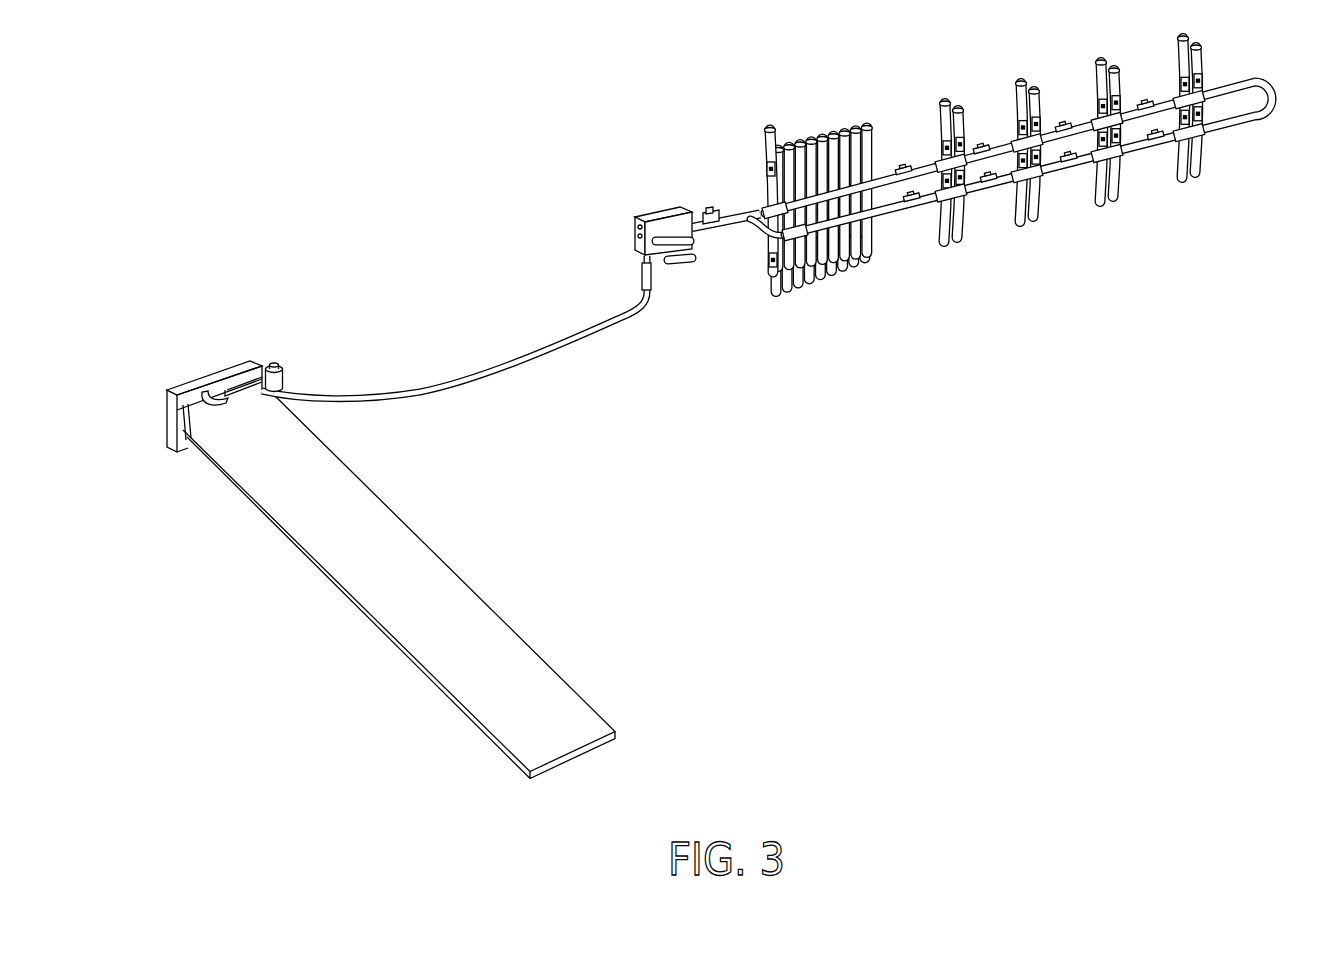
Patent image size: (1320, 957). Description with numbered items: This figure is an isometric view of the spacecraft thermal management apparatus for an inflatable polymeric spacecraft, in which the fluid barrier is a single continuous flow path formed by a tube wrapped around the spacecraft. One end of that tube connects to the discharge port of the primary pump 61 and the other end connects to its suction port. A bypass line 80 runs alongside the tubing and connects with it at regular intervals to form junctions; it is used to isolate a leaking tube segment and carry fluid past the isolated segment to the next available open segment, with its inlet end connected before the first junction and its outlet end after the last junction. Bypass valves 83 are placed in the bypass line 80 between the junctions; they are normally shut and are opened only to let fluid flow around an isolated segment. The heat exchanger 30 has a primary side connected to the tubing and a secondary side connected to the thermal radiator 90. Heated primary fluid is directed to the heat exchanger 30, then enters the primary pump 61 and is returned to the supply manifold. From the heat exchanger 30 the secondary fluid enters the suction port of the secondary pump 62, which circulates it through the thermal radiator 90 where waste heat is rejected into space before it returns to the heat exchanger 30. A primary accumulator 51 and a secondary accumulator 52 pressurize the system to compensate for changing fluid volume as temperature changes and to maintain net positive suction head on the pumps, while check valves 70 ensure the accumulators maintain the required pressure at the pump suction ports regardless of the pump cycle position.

The heat exchanger 30 is at (648, 212).
The primary accumulator 51 is at (680, 263).
The secondary accumulator 52 is at (278, 370).
The primary pump 61 is at (707, 217).
The secondary pump 62 is at (240, 395).
The check valve 70 is at (720, 217).
The bypass line 80 is at (1128, 145).
The bypass valve 83 is at (903, 173).
The thermal radiator 90 is at (460, 581).